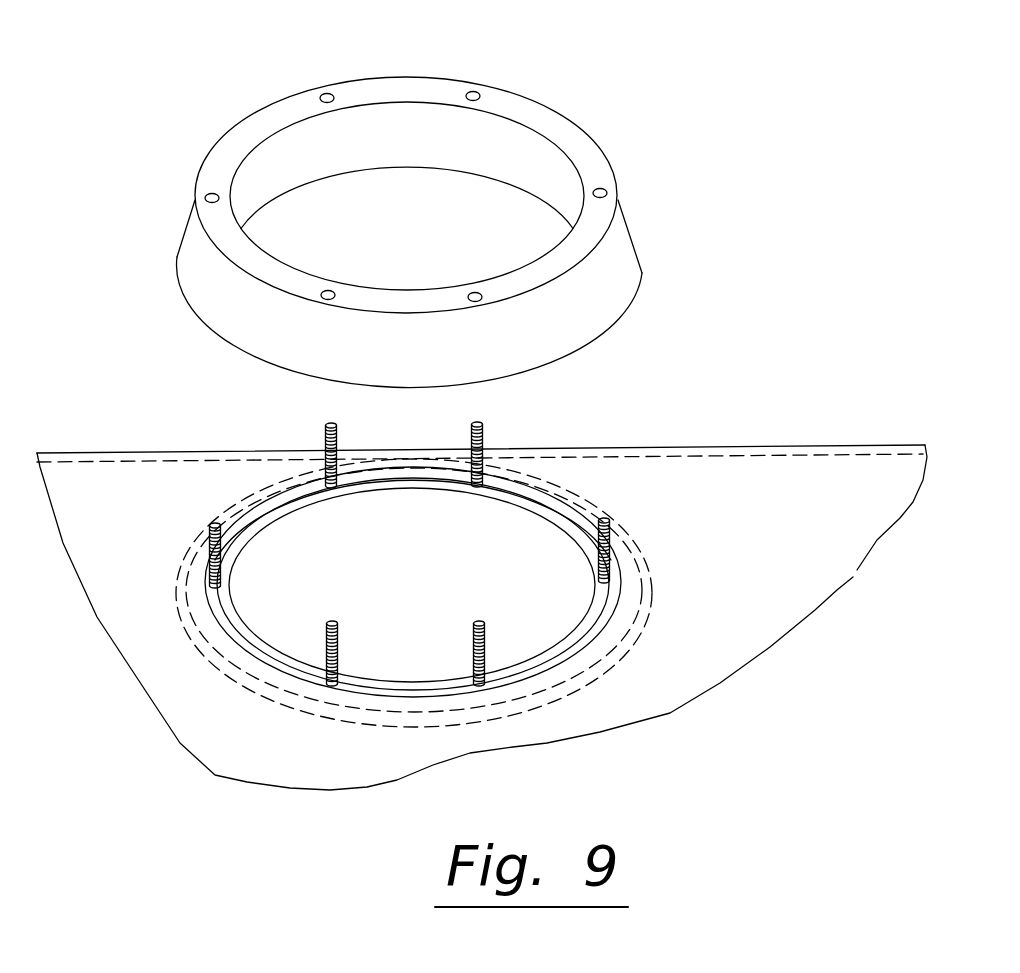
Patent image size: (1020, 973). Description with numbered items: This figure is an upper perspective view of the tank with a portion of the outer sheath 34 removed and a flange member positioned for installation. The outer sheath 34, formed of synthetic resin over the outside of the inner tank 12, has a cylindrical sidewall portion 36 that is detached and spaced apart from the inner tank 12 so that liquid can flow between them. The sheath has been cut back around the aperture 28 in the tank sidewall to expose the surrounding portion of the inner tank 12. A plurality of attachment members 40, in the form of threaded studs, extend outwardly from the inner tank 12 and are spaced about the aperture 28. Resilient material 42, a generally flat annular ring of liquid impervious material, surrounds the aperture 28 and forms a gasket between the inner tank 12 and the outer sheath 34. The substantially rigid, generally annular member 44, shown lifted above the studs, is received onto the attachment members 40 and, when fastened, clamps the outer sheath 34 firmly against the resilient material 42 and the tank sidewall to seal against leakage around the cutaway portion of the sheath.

The inner tank 12 is at (593, 627).
The aperture 28 is at (347, 500).
The outer sheath 34 is at (670, 445).
The cylindrical sidewall portion 36 is at (790, 484).
The attachment members 40 is at (337, 436).
The resilient material 42 is at (550, 503).
The annular member 44 is at (627, 226).